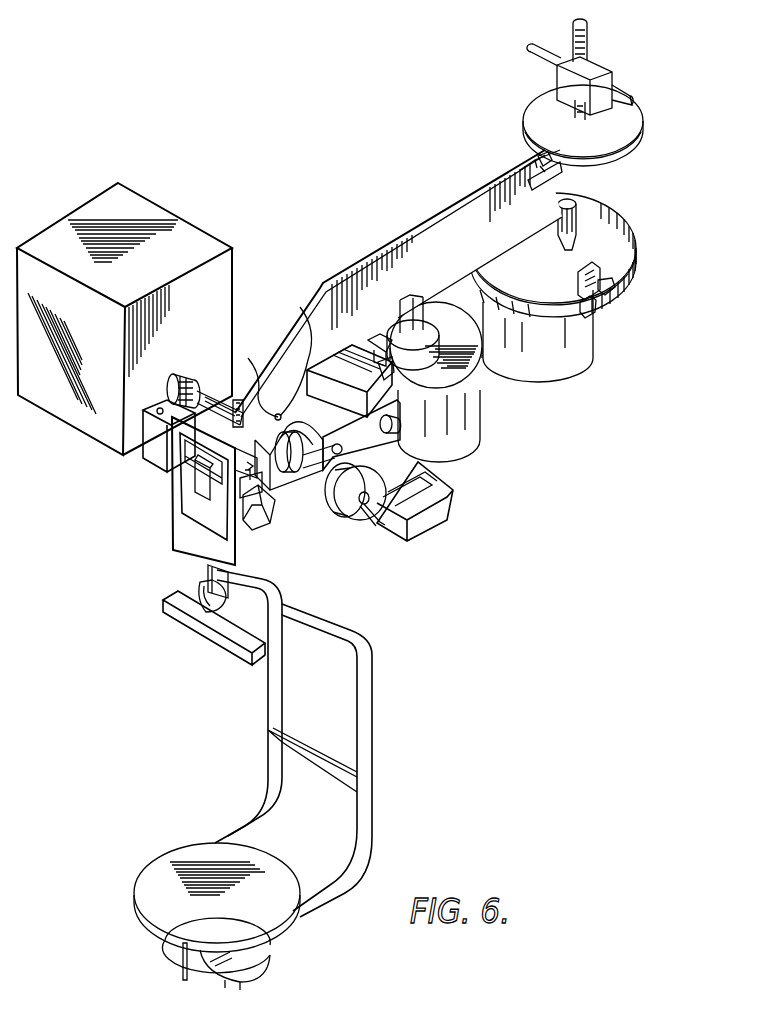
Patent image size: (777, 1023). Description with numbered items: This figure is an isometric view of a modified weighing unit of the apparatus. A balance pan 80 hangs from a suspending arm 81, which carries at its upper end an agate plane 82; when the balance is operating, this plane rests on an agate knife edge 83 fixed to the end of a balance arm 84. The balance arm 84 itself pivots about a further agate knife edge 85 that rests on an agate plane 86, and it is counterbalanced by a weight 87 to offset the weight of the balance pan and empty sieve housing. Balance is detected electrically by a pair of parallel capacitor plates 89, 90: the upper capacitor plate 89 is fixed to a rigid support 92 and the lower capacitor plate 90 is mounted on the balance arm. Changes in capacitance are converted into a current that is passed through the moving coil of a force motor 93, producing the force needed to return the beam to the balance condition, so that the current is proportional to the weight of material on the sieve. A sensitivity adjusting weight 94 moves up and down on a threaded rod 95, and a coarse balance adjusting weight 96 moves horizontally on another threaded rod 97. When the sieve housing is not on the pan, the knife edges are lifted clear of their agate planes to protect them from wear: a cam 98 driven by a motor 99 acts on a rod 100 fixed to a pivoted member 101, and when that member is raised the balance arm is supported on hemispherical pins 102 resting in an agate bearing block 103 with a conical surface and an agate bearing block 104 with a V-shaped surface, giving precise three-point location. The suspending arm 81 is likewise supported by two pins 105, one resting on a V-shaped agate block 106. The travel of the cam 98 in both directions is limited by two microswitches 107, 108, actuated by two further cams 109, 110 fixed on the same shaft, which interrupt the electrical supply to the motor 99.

The balance pan 80 is at (206, 850).
The suspending arm 81 is at (182, 531).
The agate plane 82 is at (168, 464).
The agate knife edge 83 is at (210, 460).
The balance arm 84 is at (360, 277).
The agate knife edge 85 is at (377, 340).
The agate plane 86 is at (450, 383).
The weight 87 is at (560, 358).
The upper capacitor plate 89 is at (612, 130).
The lower capacitor plate 90 is at (622, 156).
The rigid support 92 is at (603, 78).
The force motor 93 is at (443, 426).
The sensitivity adjusting weight 94 is at (612, 204).
The threaded rod 95 is at (620, 246).
The coarse balance adjusting weight 96 is at (540, 160).
The threaded rod 97 is at (528, 169).
The cam 98 is at (297, 477).
The motor 99 is at (196, 241).
The rod 100 is at (343, 451).
The pivoted member 101 is at (300, 307).
The hemispherical pins 102 is at (248, 358).
The agate bearing block 103 is at (293, 412).
The agate bearing block 104 is at (608, 290).
The pins 105 is at (160, 437).
The V-shaped agate block 106 is at (265, 508).
The microswitch 107 is at (425, 473).
The microswitch 108 is at (443, 491).
The cam 109 is at (333, 512).
The cam 110 is at (366, 518).